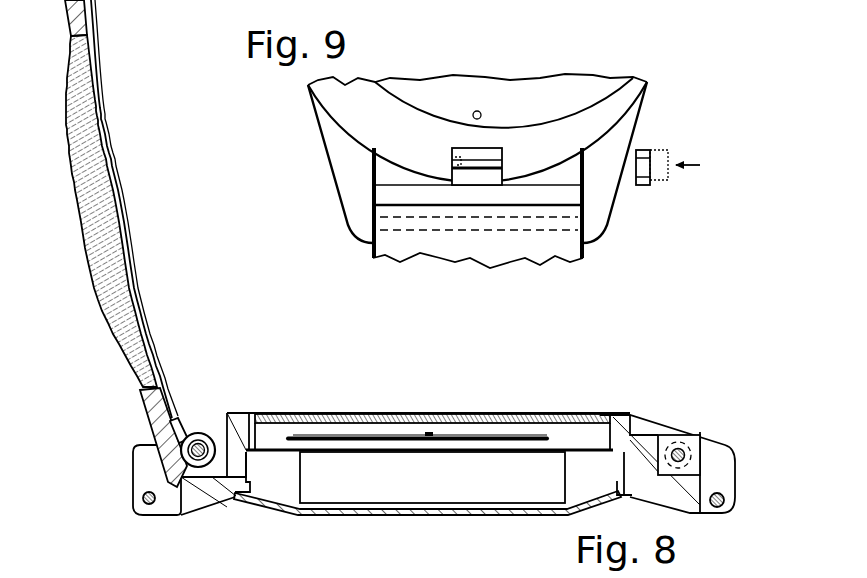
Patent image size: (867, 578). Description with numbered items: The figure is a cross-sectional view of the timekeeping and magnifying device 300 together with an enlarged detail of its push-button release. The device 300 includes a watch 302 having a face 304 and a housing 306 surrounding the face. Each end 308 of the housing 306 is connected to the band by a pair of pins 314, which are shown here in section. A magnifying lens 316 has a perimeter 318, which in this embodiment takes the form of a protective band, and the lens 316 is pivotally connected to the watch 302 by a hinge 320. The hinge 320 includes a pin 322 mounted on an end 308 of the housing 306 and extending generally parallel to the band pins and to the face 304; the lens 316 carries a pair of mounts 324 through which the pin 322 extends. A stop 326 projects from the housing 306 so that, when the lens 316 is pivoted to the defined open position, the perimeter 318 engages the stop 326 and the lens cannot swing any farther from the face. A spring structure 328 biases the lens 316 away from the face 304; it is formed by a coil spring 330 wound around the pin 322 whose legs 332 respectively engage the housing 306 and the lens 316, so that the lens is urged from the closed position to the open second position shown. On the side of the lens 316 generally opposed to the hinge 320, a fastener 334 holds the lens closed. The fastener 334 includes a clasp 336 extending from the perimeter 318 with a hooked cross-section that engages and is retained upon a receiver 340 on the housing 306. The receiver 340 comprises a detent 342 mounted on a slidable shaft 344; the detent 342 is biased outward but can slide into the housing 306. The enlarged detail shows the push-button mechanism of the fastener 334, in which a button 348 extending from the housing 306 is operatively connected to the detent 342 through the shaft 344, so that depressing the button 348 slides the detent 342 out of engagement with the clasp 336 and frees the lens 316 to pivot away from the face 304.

In FIG. 8, the timekeeping and magnifying device 300 is at (735, 345).
In FIG. 8, the watch 302 is at (297, 478).
In FIG. 8, the face 304 is at (487, 412).
In FIG. 8, the housing 306 is at (445, 511).
In FIG. 9, the housing 306 is at (578, 141).
In FIG. 8, the end 308 is at (130, 470).
In FIG. 9, the end 308 is at (340, 208).
In FIG. 8, the pins 314 is at (145, 502).
In FIG. 9, the pins 314 is at (552, 233).
In FIG. 8, the magnifying lens 316 is at (60, 129).
In FIG. 8, the perimeter 318 is at (58, 3).
In FIG. 8, the hinge 320 is at (187, 420).
In FIG. 8, the pin 322 is at (215, 450).
In FIG. 8, the mounts 324 is at (210, 425).
In FIG. 8, the stop 326 is at (219, 462).
In FIG. 8, the spring structure 328 is at (213, 436).
In FIG. 8, the coil spring 330 is at (259, 412).
In FIG. 8, the legs 332 is at (175, 428).
In FIG. 8, the fastener 334 is at (148, 0).
In FIG. 8, the clasp 336 is at (112, 0).
In FIG. 8, the receiver 340 is at (677, 432).
In FIG. 9, the receiver 340 is at (443, 158).
In FIG. 8, the detent 342 is at (700, 450).
In FIG. 9, the detent 342 is at (469, 150).
In FIG. 8, the slidable shaft 344 is at (688, 459).
In FIG. 9, the slidable shaft 344 is at (493, 156).
In FIG. 9, the button 348 is at (652, 165).